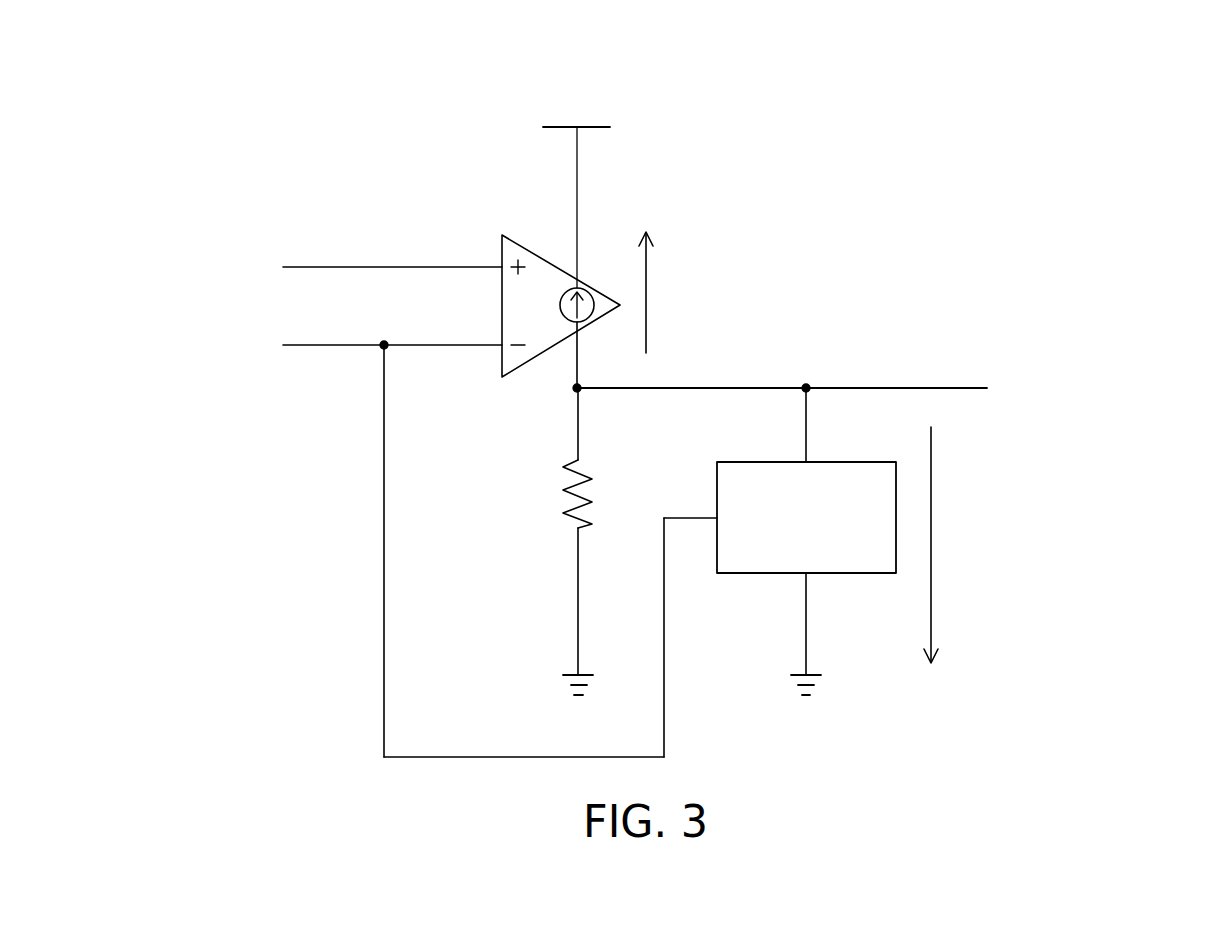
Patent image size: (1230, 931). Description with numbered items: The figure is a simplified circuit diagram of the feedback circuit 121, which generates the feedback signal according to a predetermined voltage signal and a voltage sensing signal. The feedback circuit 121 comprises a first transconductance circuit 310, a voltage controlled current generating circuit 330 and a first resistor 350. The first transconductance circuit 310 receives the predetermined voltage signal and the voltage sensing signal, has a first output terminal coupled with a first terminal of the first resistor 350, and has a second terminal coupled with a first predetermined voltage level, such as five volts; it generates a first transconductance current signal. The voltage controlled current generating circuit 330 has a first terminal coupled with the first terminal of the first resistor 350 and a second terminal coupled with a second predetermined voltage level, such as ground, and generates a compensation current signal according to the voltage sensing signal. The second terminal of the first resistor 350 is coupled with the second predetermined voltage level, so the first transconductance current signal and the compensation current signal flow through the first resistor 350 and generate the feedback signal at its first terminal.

The feedback circuit 121 is at (1034, 100).
The first transconductance circuit 310 is at (527, 243).
The voltage controlled current generating circuit 330 is at (833, 575).
The first resistor 350 is at (556, 496).